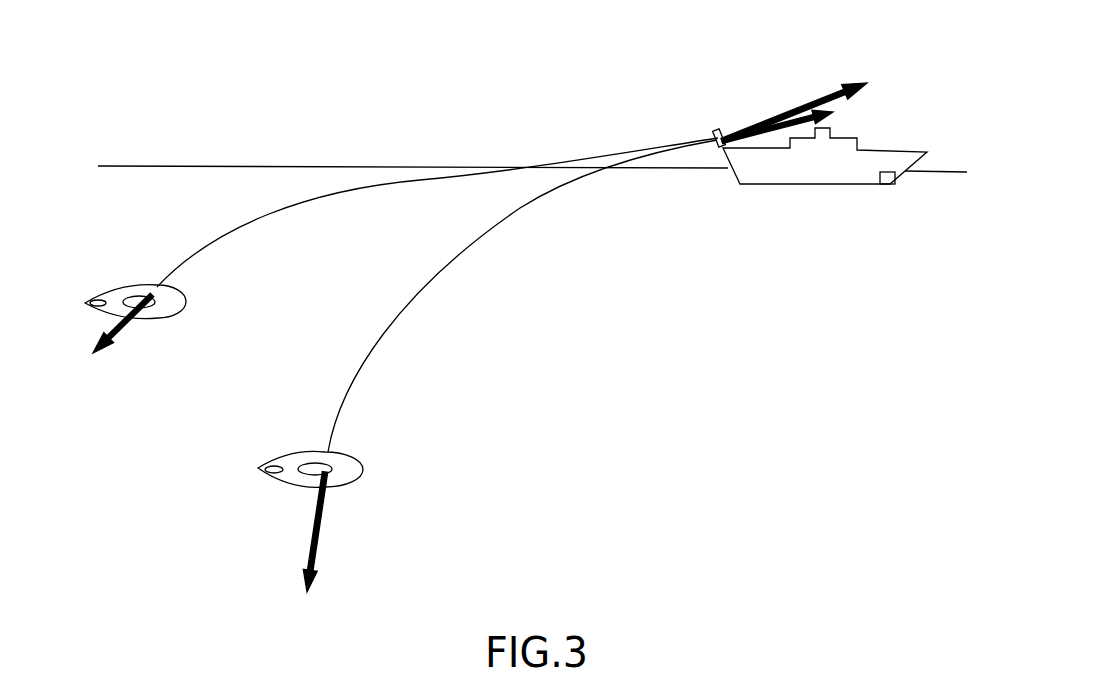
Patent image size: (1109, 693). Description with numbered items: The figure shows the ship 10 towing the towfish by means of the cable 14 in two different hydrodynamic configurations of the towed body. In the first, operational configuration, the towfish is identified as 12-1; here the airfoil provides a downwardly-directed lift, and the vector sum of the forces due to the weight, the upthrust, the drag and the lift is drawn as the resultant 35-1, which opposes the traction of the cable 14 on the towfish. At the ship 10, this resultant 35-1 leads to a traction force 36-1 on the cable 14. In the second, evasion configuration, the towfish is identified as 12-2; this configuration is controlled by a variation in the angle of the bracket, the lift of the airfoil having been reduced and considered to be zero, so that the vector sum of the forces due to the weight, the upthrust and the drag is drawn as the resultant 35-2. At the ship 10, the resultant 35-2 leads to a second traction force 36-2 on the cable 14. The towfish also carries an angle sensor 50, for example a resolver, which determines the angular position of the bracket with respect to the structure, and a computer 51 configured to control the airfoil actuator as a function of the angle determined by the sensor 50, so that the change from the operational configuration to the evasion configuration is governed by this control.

The ship 10 is at (820, 176).
The angle sensor 50 is at (889, 185).
The computer 51 is at (711, 132).
The traction force 36-1 is at (834, 92).
The traction force 36-2 is at (834, 121).
The cable 14 is at (390, 191).
The towfish in operational configuration 12-1 is at (365, 470).
The towfish in evasion configuration 12-2 is at (188, 305).
The vector sum of forces 35-1 is at (325, 512).
The vector sum of forces 35-2 is at (120, 316).